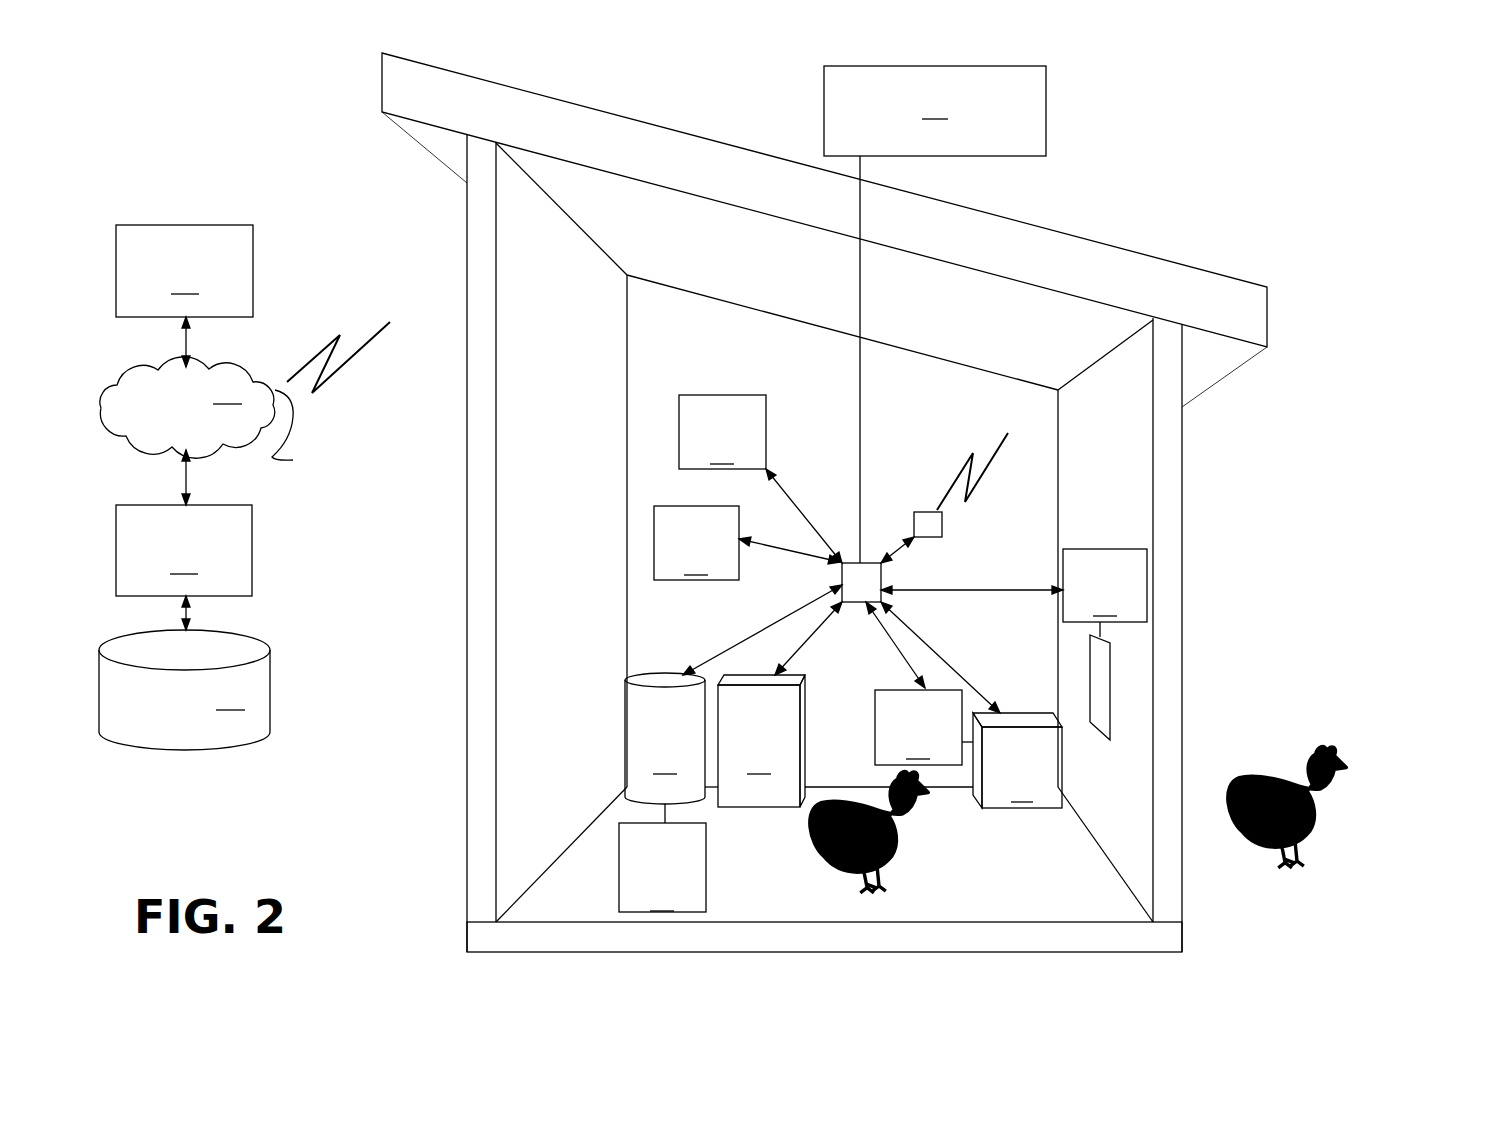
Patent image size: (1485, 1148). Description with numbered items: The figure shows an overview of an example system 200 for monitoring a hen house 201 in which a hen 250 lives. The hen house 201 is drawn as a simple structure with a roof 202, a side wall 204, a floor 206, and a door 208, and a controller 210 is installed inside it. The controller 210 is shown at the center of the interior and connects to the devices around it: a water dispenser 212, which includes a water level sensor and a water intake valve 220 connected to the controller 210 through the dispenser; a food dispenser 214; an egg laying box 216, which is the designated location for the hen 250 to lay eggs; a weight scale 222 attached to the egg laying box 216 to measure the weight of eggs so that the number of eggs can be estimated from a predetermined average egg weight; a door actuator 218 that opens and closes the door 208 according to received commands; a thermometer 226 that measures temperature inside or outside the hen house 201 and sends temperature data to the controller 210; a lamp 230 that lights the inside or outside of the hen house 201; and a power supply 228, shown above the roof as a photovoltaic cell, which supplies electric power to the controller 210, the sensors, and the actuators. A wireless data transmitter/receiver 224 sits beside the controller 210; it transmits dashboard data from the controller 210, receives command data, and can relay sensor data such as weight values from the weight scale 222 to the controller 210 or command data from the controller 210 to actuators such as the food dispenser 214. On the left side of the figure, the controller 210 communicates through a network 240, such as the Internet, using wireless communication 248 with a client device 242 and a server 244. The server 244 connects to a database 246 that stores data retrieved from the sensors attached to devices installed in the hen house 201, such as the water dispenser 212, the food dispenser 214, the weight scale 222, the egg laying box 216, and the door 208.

The system 200 is at (1372, 106).
The hen house 201 is at (1268, 260).
The roof 202 is at (1045, 231).
The side wall 204 is at (467, 222).
The floor 206 is at (537, 907).
The door 208 is at (1110, 695).
The controller 210 is at (881, 575).
The water dispenser 212 is at (733, 694).
The food dispenser 214 is at (780, 704).
The egg laying box 216 is at (971, 705).
The door actuator 218 is at (1014, 593).
The water intake valve 220 is at (662, 858).
The weight scale 222 is at (919, 683).
The wireless data transmitter/receiver 224 is at (942, 523).
The thermometer 226 is at (747, 543).
The power supply 228 is at (935, 314).
The lamp 230 is at (760, 479).
The network 240 is at (187, 431).
The client device 242 is at (184, 296).
The server 244 is at (184, 567).
The database 246 is at (184, 690).
The wireless communication 248 is at (353, 420).
The hen 250 is at (1327, 822).